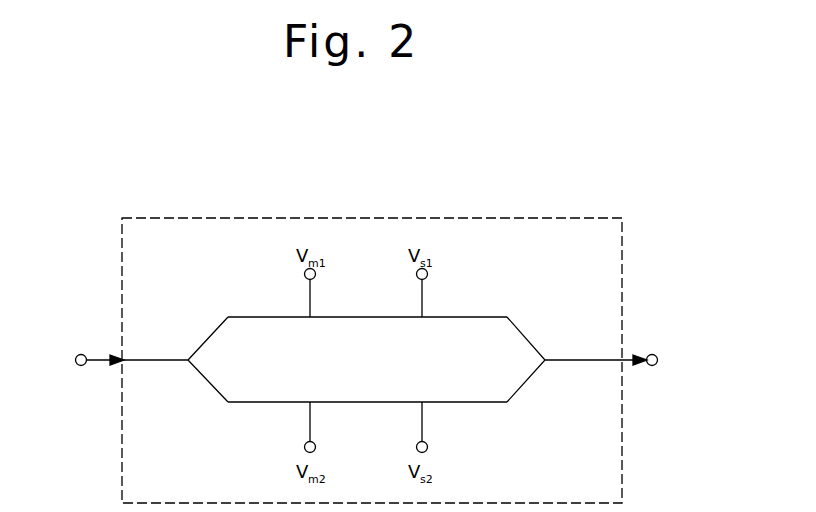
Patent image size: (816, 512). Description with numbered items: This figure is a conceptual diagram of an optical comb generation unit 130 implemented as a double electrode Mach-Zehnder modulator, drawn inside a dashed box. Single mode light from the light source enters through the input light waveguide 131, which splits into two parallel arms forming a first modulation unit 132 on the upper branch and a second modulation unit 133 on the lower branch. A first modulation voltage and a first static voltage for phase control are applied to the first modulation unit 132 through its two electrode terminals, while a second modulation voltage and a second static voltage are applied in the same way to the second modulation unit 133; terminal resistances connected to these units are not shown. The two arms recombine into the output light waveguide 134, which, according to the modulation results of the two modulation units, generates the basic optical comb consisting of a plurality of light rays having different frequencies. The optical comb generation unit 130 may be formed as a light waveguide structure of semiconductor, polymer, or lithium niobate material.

The optical comb generation unit 130 is at (505, 218).
The input light waveguide 131 is at (155, 357).
The first modulation unit 132 is at (470, 317).
The second modulation unit 133 is at (470, 403).
The output light waveguide 134 is at (560, 358).